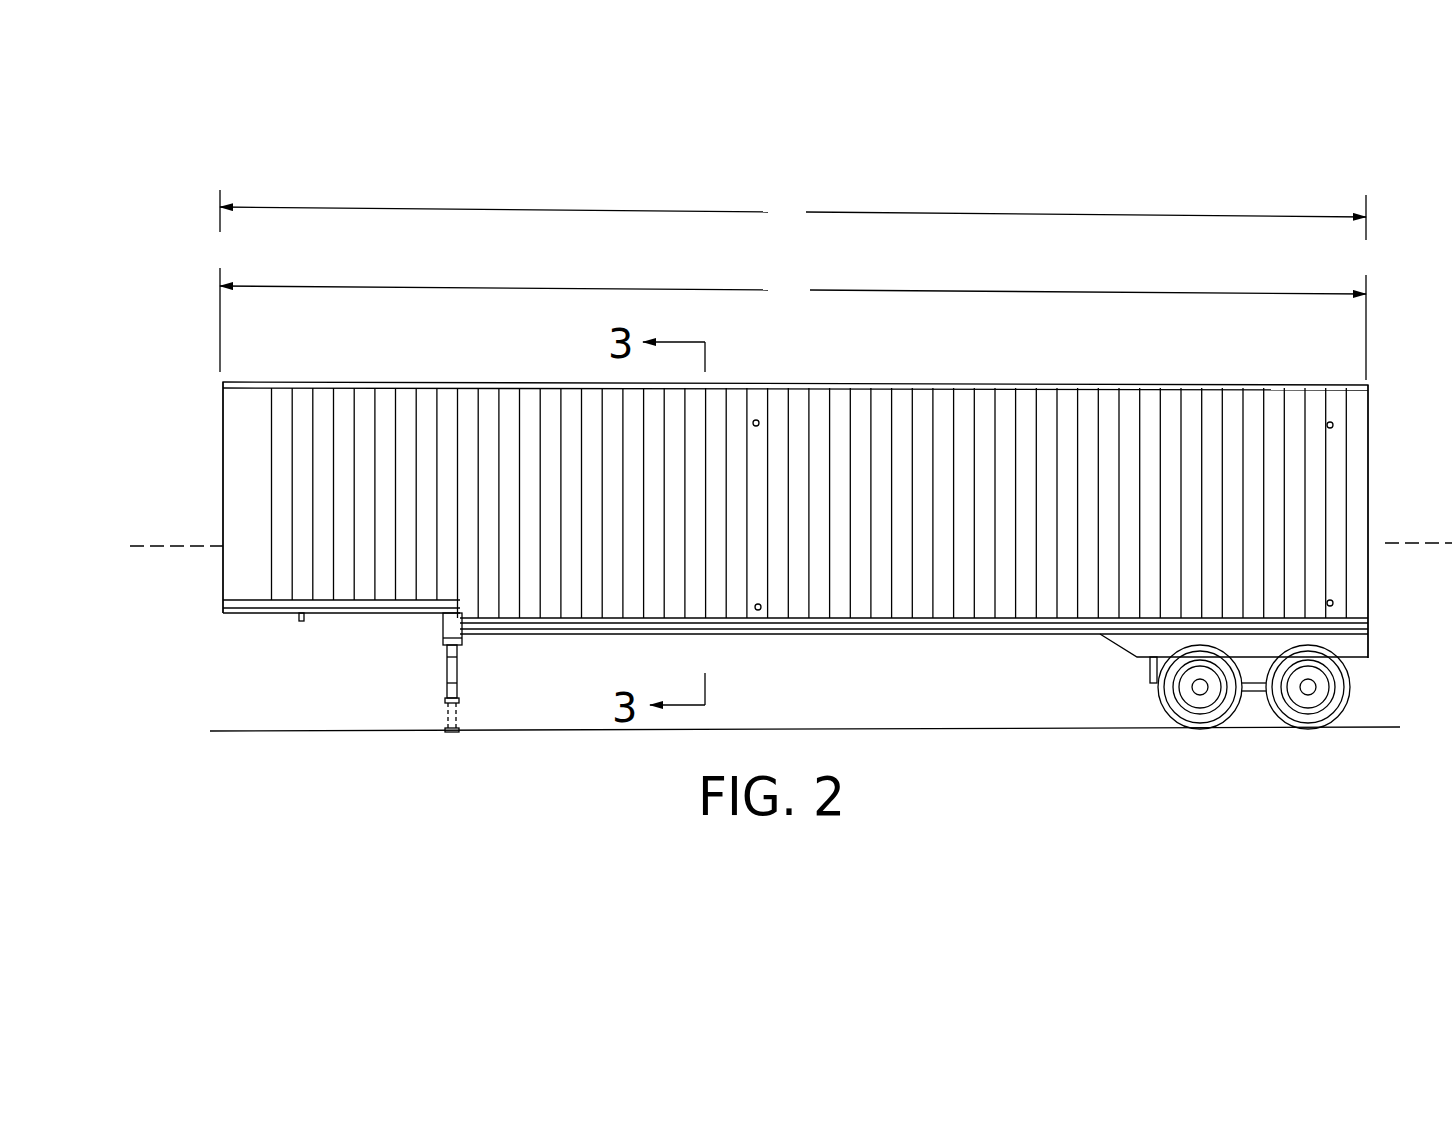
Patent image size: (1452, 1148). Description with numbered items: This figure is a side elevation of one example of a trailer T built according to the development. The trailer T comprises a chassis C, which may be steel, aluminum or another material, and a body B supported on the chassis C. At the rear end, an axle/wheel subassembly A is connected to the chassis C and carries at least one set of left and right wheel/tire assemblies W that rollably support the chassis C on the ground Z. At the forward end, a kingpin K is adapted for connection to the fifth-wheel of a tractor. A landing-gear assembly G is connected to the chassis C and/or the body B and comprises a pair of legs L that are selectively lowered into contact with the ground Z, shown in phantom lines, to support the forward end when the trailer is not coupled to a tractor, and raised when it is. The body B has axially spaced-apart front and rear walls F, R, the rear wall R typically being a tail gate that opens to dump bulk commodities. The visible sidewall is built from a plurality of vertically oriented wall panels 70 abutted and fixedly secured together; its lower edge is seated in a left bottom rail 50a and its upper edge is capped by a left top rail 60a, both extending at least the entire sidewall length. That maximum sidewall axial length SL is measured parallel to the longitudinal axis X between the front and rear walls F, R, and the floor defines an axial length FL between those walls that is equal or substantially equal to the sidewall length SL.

The floor axial length FL is at (793, 215).
The maximum sidewall axial length SL is at (793, 324).
The trailer T is at (829, 380).
The left top rail 60a is at (403, 380).
The front wall F is at (221, 463).
The rear wall R is at (1376, 468).
The body B is at (588, 387).
The wall panels 70 is at (1127, 400).
The left bottom rail 50a is at (896, 631).
The chassis C is at (1108, 646).
The axle/wheel subassembly A is at (1286, 709).
The wheel/tire assemblies W is at (1205, 713).
The landing-gear assembly G is at (429, 672).
The legs L is at (459, 682).
The kingpin K is at (300, 621).
The ground Z is at (766, 727).
The longitudinal axis X is at (1405, 542).